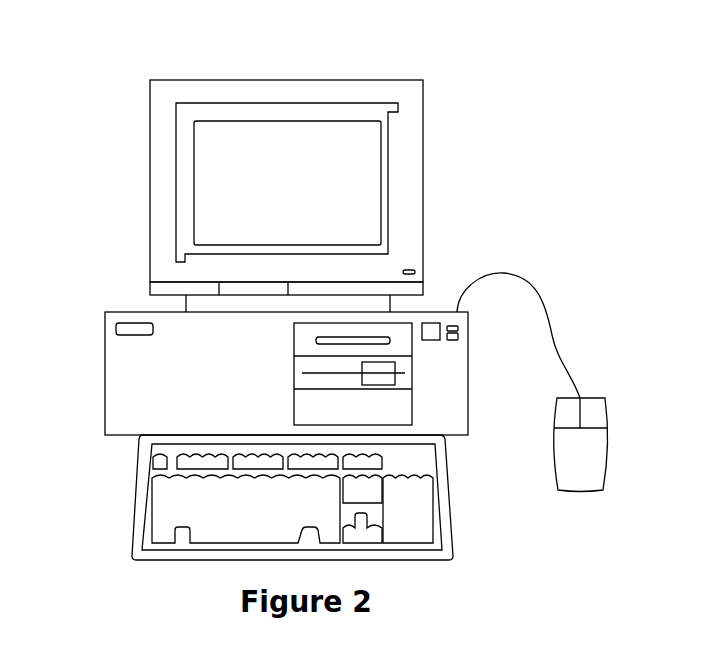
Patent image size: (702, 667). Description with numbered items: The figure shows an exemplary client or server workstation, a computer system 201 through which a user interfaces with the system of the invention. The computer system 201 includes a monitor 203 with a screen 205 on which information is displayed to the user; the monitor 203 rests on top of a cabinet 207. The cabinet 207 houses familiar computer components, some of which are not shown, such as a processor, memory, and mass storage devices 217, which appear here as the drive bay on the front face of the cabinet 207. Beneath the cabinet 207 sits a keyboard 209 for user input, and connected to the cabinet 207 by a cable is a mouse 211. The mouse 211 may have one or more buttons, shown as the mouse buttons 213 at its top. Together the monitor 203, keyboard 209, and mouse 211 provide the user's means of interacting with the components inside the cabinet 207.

The computer system 201 is at (464, 57).
The monitor 203 is at (284, 196).
The screen 205 is at (210, 173).
The cabinet 207 is at (284, 335).
The keyboard 209 is at (175, 560).
The mouse 211 is at (563, 399).
The mouse buttons 213 is at (592, 417).
The mass storage devices 217 is at (406, 325).